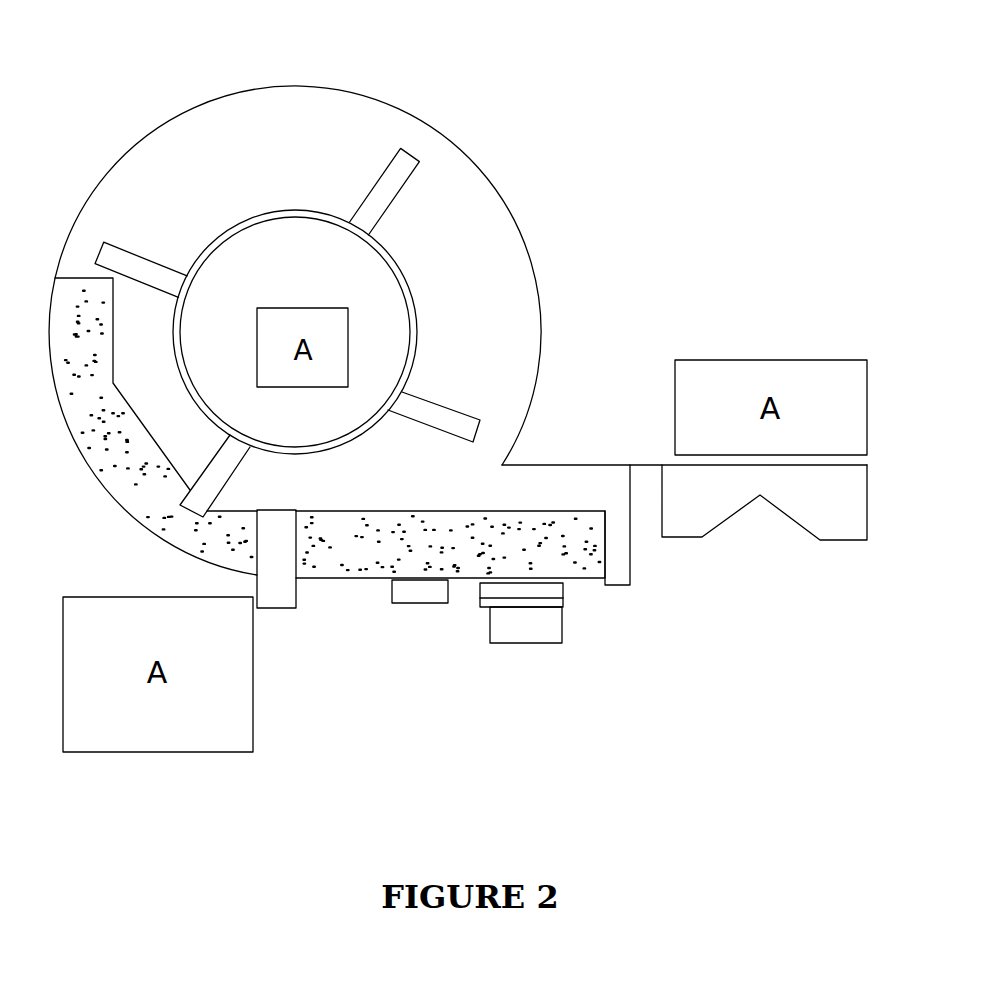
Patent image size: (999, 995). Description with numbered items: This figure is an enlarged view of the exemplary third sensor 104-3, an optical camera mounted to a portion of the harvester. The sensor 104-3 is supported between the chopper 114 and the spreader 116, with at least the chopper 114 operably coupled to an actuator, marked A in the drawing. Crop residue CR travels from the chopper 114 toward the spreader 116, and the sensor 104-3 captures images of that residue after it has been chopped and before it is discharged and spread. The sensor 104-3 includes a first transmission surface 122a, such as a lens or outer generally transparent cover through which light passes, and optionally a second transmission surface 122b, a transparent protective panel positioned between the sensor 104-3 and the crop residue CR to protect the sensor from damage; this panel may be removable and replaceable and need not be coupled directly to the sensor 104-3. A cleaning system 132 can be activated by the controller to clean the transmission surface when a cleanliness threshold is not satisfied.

The chopper 114 is at (425, 122).
The spreader 116 is at (868, 497).
The cleaning system 132 is at (402, 598).
The crop residue CR is at (562, 532).
The first transmission surface 122a is at (715, 662).
The second transmission surface 122b is at (492, 590).
The third sensor 104-3 is at (520, 633).